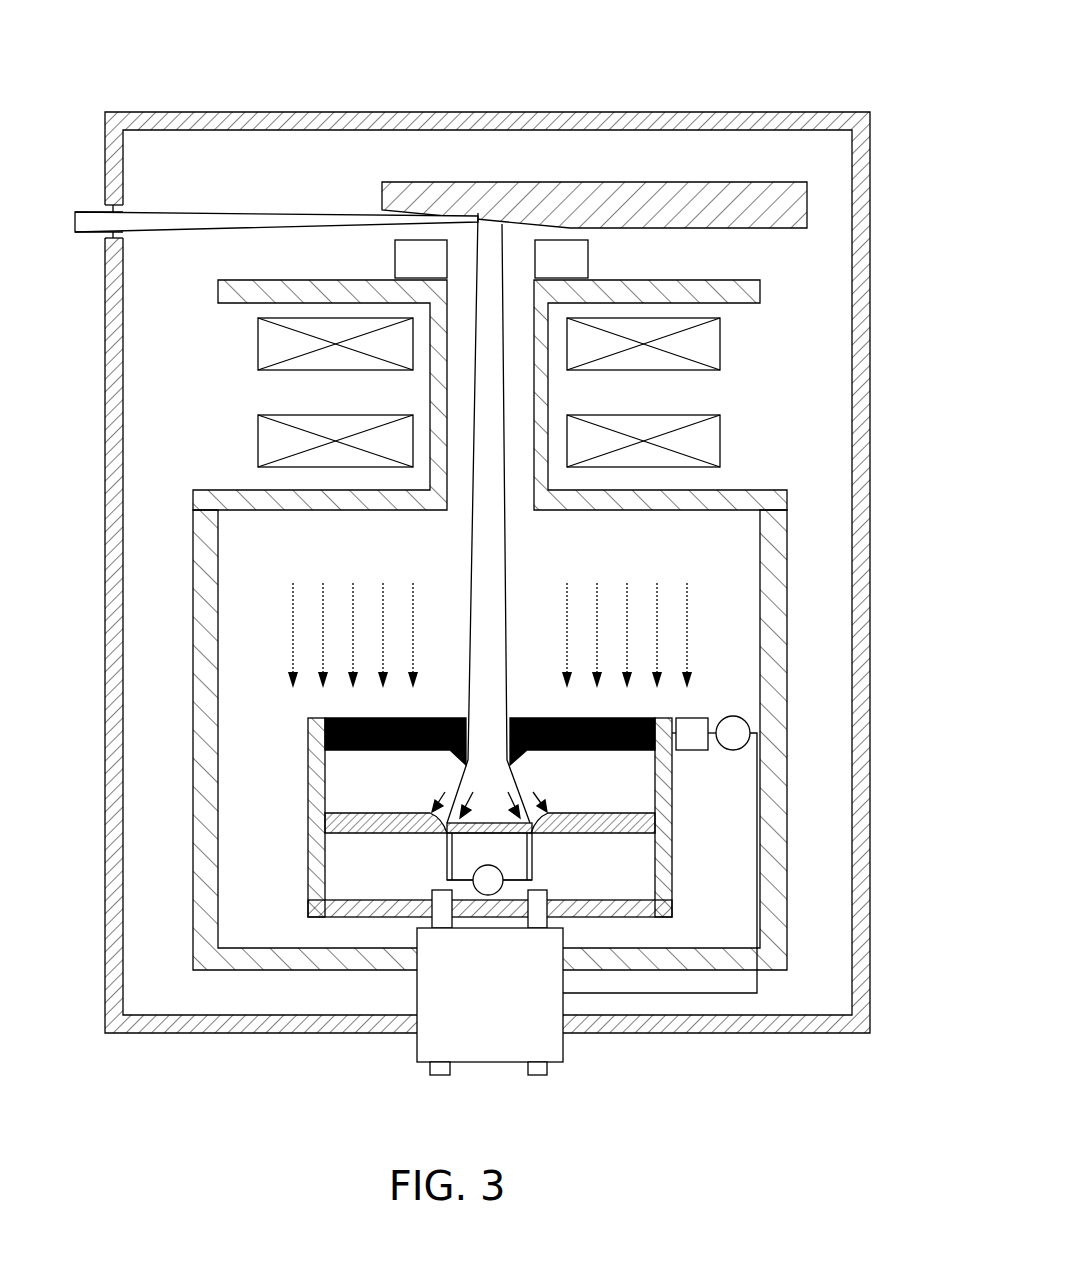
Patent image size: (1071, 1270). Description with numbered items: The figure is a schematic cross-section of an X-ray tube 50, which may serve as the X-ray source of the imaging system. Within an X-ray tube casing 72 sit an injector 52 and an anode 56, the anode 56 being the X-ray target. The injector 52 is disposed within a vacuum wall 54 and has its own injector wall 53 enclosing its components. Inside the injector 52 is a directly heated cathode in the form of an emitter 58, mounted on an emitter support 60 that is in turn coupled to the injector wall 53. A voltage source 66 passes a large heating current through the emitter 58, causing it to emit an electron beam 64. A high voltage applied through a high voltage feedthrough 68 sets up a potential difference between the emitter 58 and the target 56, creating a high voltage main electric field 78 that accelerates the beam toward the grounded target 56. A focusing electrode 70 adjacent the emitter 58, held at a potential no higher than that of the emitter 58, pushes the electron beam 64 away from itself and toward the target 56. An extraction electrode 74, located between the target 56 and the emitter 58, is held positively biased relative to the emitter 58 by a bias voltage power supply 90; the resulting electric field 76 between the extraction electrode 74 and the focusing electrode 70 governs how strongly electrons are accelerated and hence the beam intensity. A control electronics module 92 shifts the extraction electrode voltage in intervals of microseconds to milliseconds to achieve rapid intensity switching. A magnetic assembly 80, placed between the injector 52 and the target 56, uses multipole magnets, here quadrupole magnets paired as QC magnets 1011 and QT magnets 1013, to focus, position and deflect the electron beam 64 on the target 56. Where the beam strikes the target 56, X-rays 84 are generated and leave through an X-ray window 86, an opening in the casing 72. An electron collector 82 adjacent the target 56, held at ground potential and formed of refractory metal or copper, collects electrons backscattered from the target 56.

The X-ray tube 50 is at (793, 61).
The injector 52 is at (485, 787).
The injector wall 53 is at (308, 776).
The vacuum wall 54 is at (787, 494).
The anode 56 is at (688, 182).
The emitter 58 is at (447, 862).
The emitter support 60 is at (532, 858).
The electron beam 64 is at (465, 768).
The voltage source 66 is at (532, 880).
The high voltage feedthrough 68 is at (505, 1050).
The focusing electrode 70 is at (595, 813).
The X-ray tube casing 72 is at (400, 112).
The extraction electrode 74 is at (450, 718).
The electric field 76 is at (438, 791).
The high voltage main electric field 78 is at (482, 607).
The magnetic assembly 80 is at (485, 395).
The electron collector 82 is at (447, 262).
The X-rays 84 is at (192, 213).
The X-ray window 86 is at (105, 210).
The bias voltage power supply 90 is at (733, 716).
The control electronics module 92 is at (690, 752).
The QC magnets 1011 is at (258, 440).
The QT magnets 1013 is at (258, 345).